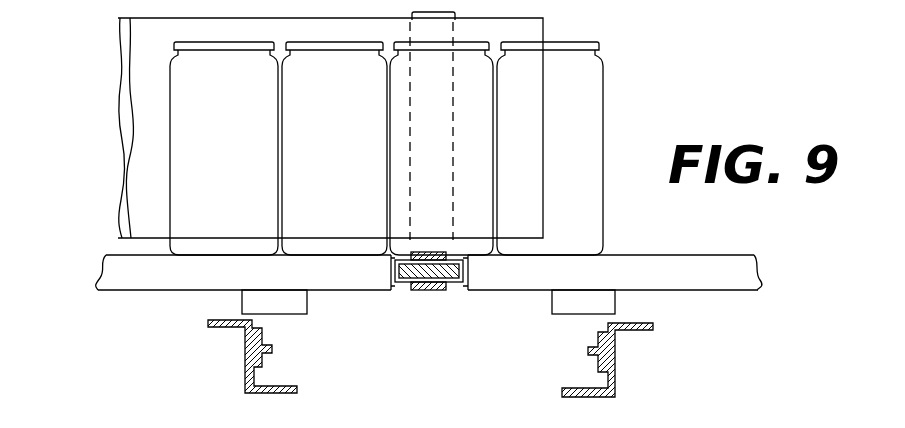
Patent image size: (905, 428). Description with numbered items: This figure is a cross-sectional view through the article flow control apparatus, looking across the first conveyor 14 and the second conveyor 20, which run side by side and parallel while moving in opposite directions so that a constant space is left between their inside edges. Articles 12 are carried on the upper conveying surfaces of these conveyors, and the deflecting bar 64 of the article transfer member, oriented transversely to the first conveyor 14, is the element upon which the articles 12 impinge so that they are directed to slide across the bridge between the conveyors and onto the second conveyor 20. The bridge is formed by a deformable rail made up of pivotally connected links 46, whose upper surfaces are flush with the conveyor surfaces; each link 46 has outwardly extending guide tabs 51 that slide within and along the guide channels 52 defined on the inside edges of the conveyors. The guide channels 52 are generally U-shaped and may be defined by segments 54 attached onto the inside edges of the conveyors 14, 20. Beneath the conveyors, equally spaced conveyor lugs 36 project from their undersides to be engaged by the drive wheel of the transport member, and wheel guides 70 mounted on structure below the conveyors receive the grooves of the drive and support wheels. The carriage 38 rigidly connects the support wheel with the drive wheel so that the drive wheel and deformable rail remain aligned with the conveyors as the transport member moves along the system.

The article 12 is at (575, 85).
The deflecting bar 64 is at (147, 135).
The carriage 38 is at (432, 152).
The first conveyor 14 is at (151, 276).
The second conveyor 20 is at (693, 277).
The conveyor lug 36 is at (285, 303).
The guide channel 52 is at (391, 266).
The segment 54 is at (470, 268).
The link 46 is at (432, 287).
The guide tab 51 is at (409, 287).
The wheel guide 70 is at (615, 352).